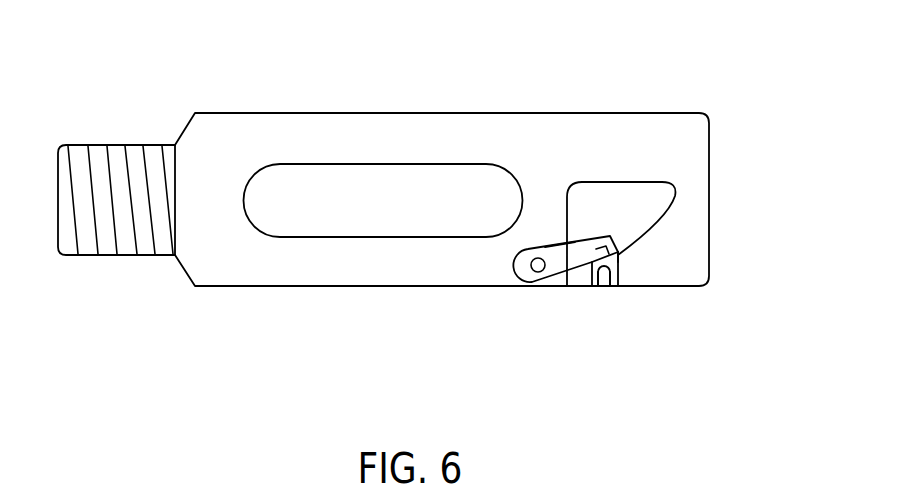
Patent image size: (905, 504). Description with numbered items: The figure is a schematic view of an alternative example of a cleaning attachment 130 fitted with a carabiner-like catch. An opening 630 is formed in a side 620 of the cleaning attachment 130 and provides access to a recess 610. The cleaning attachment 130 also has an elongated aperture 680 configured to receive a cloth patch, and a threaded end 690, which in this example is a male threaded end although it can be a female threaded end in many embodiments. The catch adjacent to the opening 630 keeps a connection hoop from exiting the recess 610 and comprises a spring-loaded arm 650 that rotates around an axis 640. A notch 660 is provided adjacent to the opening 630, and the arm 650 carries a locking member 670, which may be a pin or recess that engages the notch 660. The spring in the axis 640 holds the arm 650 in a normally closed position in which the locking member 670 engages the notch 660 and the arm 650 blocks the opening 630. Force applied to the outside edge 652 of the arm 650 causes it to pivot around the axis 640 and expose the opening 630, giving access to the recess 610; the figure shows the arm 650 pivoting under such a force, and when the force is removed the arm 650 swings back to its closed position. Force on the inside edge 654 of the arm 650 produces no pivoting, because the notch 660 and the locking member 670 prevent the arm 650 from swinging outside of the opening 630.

The cleaning attachment 130 is at (488, 130).
The recess 610 is at (635, 210).
The side 620 is at (365, 300).
The opening 630 is at (586, 272).
The axis 640 is at (536, 268).
The spring-loaded arm 650 is at (587, 243).
The outside edge 652 is at (591, 275).
The inside edge 654 is at (557, 245).
The notch 660 is at (606, 275).
The locking member 670 is at (616, 257).
The elongated aperture 680 is at (380, 205).
The threaded end 690 is at (118, 167).